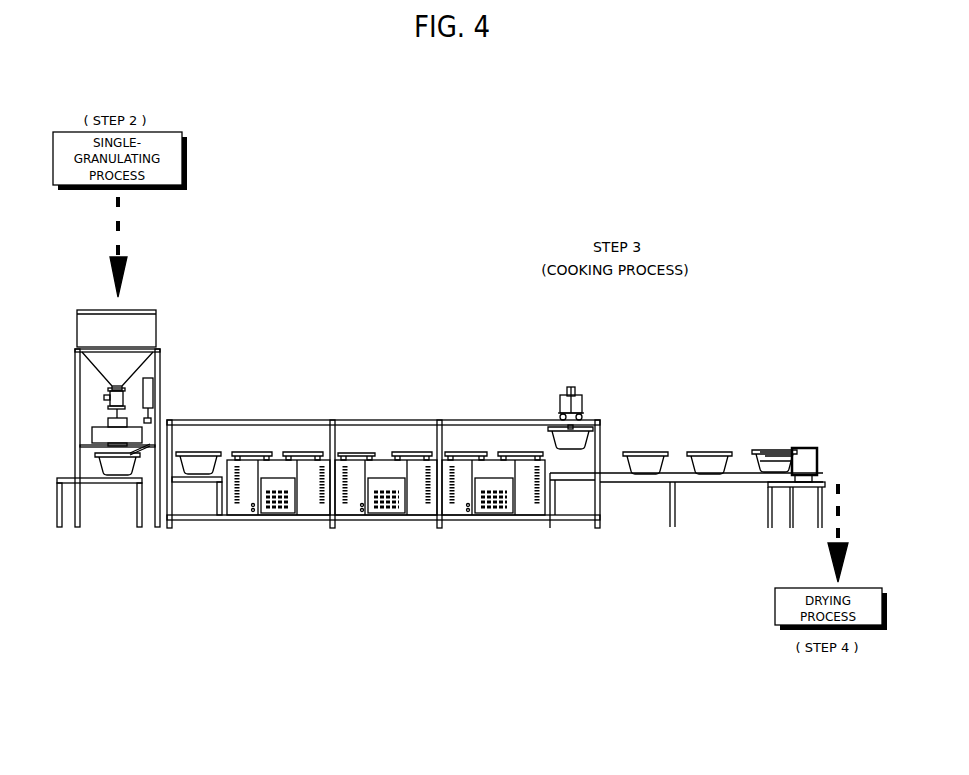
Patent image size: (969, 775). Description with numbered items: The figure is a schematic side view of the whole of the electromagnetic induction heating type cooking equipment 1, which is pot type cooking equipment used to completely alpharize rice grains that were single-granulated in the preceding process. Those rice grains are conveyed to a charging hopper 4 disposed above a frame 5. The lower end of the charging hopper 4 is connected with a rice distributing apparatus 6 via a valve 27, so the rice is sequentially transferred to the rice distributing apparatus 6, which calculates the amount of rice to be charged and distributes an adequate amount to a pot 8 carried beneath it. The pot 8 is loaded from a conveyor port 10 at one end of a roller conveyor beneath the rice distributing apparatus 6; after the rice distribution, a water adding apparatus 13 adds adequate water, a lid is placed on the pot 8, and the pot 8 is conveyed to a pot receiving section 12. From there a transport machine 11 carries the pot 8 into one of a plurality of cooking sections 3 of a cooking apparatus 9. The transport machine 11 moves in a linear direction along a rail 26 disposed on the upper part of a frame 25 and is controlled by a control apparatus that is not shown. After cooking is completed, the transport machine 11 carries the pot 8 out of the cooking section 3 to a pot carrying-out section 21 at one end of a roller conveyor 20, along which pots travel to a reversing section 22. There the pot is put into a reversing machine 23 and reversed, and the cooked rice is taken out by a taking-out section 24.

The electromagnetic induction heating type cooking equipment 1 is at (500, 260).
The cooking section 3 is at (234, 452).
The charging hopper 4 is at (157, 330).
The frame 5 is at (161, 364).
The rice distributing apparatus 6 is at (92, 435).
The pot 8 is at (112, 474).
The cooking apparatus 9 is at (254, 512).
The conveyor port 10 is at (65, 478).
The transport machine 11 is at (561, 397).
The pot receiving section 12 is at (205, 480).
The water adding apparatus 13 is at (153, 400).
The roller conveyor 20 is at (672, 500).
The pot carrying-out section 21 is at (572, 477).
The reversing section 22 is at (770, 477).
The reversing machine 23 is at (803, 455).
The taking-out section 24 is at (832, 477).
The frame 25 is at (604, 445).
The rail 26 is at (532, 420).
The valve 27 is at (110, 398).